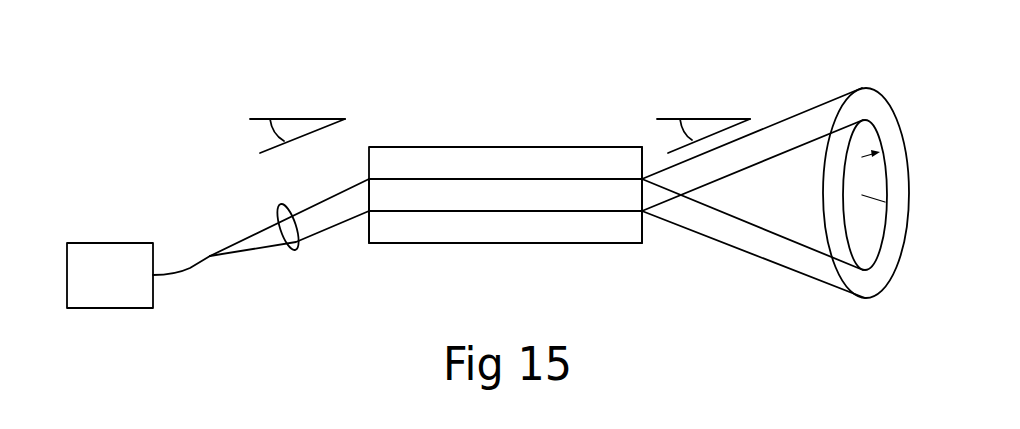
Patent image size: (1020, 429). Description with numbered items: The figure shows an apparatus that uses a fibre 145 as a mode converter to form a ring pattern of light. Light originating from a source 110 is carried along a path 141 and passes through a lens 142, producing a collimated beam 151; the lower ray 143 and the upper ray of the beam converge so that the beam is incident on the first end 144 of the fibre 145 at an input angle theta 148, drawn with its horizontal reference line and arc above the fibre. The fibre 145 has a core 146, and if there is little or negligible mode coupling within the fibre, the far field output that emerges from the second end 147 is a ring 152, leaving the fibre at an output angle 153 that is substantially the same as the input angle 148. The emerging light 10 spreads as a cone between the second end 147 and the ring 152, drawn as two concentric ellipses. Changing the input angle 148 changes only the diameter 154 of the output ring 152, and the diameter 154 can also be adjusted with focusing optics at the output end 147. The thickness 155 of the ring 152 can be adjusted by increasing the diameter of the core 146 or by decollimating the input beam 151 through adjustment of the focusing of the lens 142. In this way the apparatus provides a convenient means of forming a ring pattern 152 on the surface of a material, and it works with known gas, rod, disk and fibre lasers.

The light beam 10 is at (695, 213).
The light source 110 is at (127, 308).
The light guide 141 is at (183, 272).
The lens 142 is at (300, 245).
The lower light ray 143 is at (263, 245).
The first end 144 is at (369, 221).
The fibre 145 is at (454, 145).
The core 146 is at (565, 211).
The second end 147 is at (642, 233).
The angle θ 148 is at (287, 118).
The collimated beam 151 is at (330, 195).
The ring 152 is at (862, 302).
The angle 153 is at (697, 119).
The diameter 154 is at (890, 206).
The thickness 155 is at (910, 139).